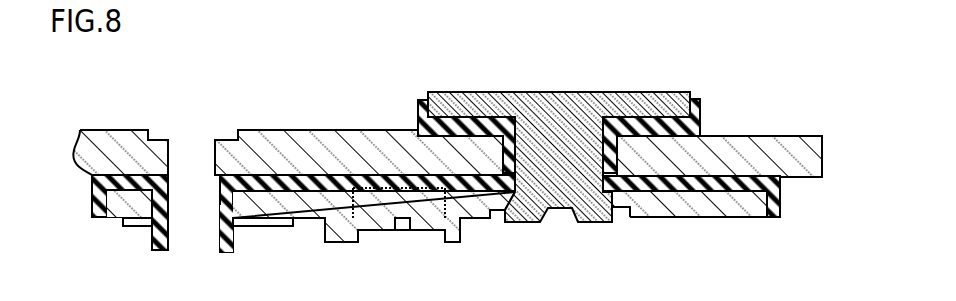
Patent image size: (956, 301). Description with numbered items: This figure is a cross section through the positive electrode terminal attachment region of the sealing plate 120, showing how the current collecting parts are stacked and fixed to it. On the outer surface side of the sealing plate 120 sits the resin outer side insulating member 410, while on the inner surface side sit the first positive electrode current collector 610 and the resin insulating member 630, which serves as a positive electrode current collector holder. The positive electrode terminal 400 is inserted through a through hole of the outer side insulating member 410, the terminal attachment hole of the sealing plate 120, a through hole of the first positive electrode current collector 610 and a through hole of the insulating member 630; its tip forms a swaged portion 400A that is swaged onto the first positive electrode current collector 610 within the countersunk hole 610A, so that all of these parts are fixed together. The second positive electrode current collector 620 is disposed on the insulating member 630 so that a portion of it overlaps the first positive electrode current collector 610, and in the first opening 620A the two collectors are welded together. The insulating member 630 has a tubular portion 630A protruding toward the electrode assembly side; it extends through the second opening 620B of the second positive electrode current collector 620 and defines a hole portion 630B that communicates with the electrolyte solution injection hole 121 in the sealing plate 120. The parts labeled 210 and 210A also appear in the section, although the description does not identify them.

The sealing plate 120 is at (778, 144).
The electrolyte solution injection hole 121 is at (168, 158).
The frame 210 is at (359, 152).
The frame protrusion 210A is at (256, 227).
The positive electrode terminal 400 is at (557, 104).
The swaged portion 400A is at (527, 223).
The outer side insulating member 410 is at (700, 123).
The first positive electrode current collector 610 is at (712, 208).
The countersunk hole 610A is at (622, 208).
The second positive electrode current collector 620 is at (310, 206).
The first opening 620A is at (408, 232).
The second opening 620B is at (221, 203).
The insulating member 630 is at (121, 179).
The tubular portion 630A is at (159, 251).
The hole portion 630B is at (222, 224).